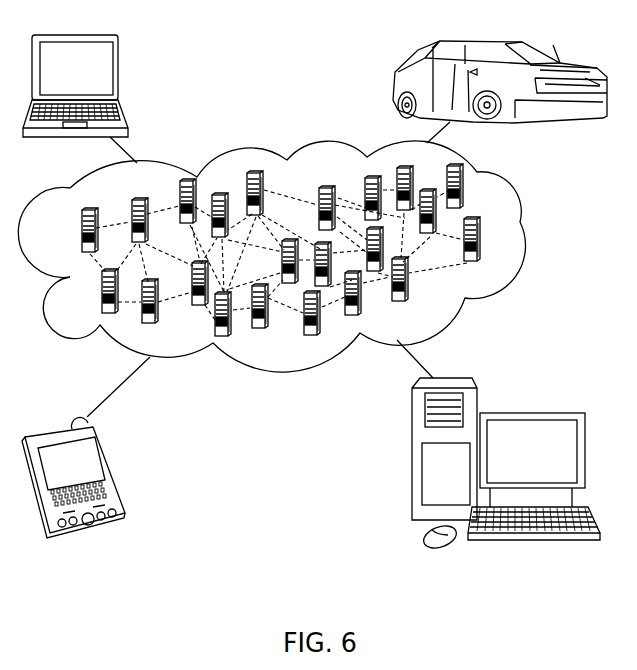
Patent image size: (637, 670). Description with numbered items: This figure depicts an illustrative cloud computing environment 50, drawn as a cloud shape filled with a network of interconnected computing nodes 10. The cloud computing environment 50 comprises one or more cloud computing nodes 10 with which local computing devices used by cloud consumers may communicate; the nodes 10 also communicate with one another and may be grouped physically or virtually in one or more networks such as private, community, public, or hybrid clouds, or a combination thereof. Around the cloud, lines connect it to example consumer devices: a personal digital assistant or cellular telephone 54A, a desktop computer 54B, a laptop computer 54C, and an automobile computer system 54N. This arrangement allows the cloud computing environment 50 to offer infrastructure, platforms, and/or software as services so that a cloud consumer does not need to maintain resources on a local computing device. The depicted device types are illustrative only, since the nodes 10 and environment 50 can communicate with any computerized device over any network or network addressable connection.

The cloud computing node 10 is at (495, 256).
The cloud computing environment 50 is at (530, 237).
The personal digital assistant (PDA) or cellular telephone 54A is at (110, 470).
The desktop computer 54B is at (530, 412).
The laptop computer 54C is at (118, 70).
The automobile computer system 54N is at (395, 82).